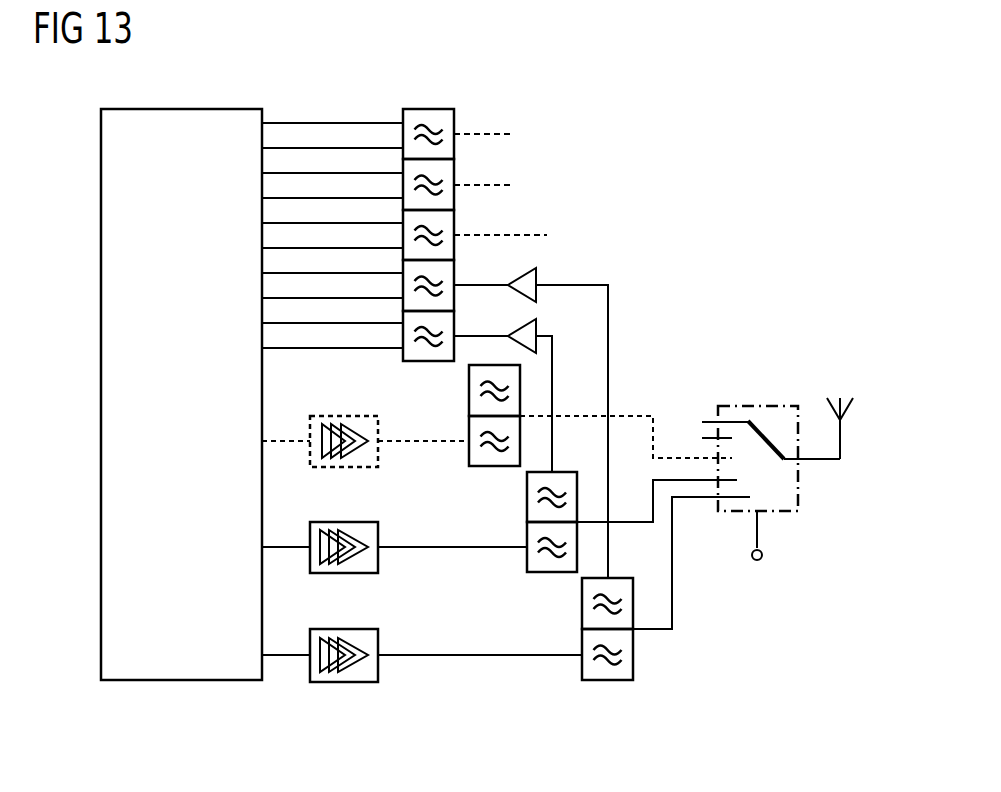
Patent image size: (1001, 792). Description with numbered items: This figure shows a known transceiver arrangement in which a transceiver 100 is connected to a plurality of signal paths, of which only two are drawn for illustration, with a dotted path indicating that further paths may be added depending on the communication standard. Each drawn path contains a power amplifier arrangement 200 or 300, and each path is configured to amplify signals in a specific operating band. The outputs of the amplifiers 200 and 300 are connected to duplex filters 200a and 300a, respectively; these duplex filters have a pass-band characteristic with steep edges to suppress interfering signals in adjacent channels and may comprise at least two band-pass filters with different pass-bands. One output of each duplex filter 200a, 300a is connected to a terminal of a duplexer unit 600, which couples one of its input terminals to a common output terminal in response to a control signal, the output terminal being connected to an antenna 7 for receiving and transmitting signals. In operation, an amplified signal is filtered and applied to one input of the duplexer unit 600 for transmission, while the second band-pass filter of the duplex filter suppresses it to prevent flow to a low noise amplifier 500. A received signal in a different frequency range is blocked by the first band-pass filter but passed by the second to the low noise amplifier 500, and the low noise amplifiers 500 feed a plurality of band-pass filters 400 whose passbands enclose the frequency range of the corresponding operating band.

The transceiver 100 is at (101, 353).
The band-pass filters 400 is at (390, 113).
The low noise amplifier 500 is at (529, 217).
The duplexer unit 600 is at (755, 388).
The antenna 7 is at (843, 398).
The power amplifier arrangement 300 is at (378, 560).
The power amplifier arrangement 200 is at (378, 668).
The duplex filter 300a is at (547, 572).
The duplex filter 200a is at (633, 668).